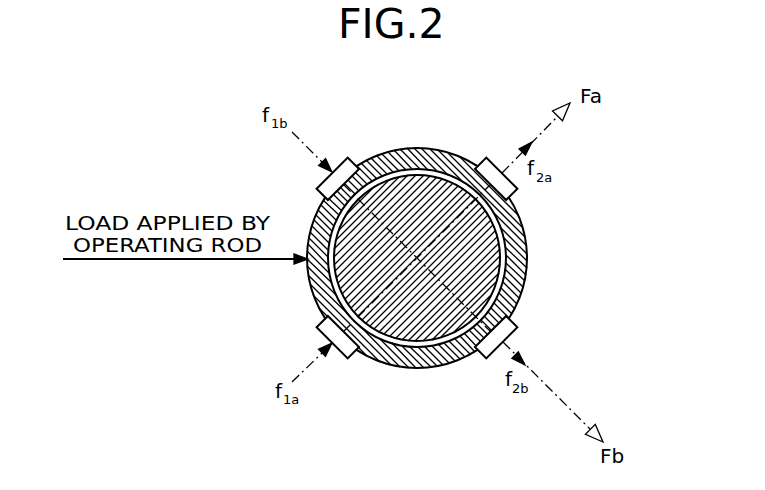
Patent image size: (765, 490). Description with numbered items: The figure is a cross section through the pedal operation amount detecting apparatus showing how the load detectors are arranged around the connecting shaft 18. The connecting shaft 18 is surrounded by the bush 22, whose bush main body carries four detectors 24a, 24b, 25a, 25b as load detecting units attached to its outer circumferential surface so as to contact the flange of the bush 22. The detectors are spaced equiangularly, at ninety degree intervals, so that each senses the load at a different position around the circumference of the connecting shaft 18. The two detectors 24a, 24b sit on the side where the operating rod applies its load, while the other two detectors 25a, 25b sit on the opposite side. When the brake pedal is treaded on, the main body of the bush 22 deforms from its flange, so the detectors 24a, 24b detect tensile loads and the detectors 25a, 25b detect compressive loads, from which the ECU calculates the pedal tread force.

The connecting shaft 18 is at (409, 305).
The bush 22 is at (523, 250).
The detector 24a is at (352, 357).
The detector 24b is at (348, 160).
The detector 25a is at (485, 160).
The detector 25b is at (510, 335).